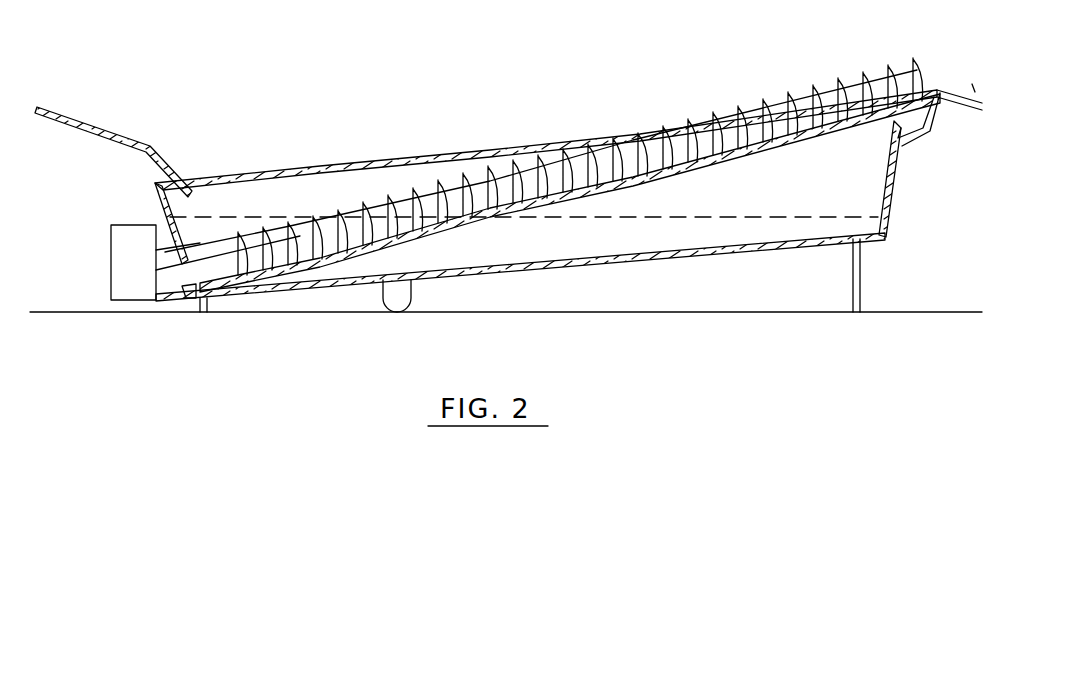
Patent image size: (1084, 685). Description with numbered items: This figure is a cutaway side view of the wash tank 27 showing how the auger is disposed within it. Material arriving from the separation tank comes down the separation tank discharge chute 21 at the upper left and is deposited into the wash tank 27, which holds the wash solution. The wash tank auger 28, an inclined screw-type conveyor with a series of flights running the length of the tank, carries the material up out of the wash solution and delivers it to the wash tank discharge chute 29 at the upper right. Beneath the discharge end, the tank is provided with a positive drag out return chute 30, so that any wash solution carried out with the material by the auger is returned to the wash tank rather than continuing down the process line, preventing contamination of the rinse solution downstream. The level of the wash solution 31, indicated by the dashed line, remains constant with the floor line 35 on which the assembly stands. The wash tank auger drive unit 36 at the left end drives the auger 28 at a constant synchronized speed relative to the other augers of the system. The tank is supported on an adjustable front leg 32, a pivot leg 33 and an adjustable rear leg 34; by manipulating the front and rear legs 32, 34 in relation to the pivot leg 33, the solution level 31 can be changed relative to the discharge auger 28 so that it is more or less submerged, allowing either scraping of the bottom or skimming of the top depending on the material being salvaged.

The separation tank discharge chute 21 is at (122, 138).
The wash tank 27 is at (288, 206).
The wash tank auger 28 is at (688, 114).
The wash tank discharge chute 29 is at (972, 84).
The positive drag out return chute 30 is at (906, 143).
The wash solution level 31 is at (728, 212).
The adjustable front leg 32 is at (864, 268).
The pivot leg 33 is at (414, 292).
The adjustable rear leg 34 is at (184, 306).
The floor line 35 is at (662, 310).
The wash tank auger drive unit 36 is at (108, 262).